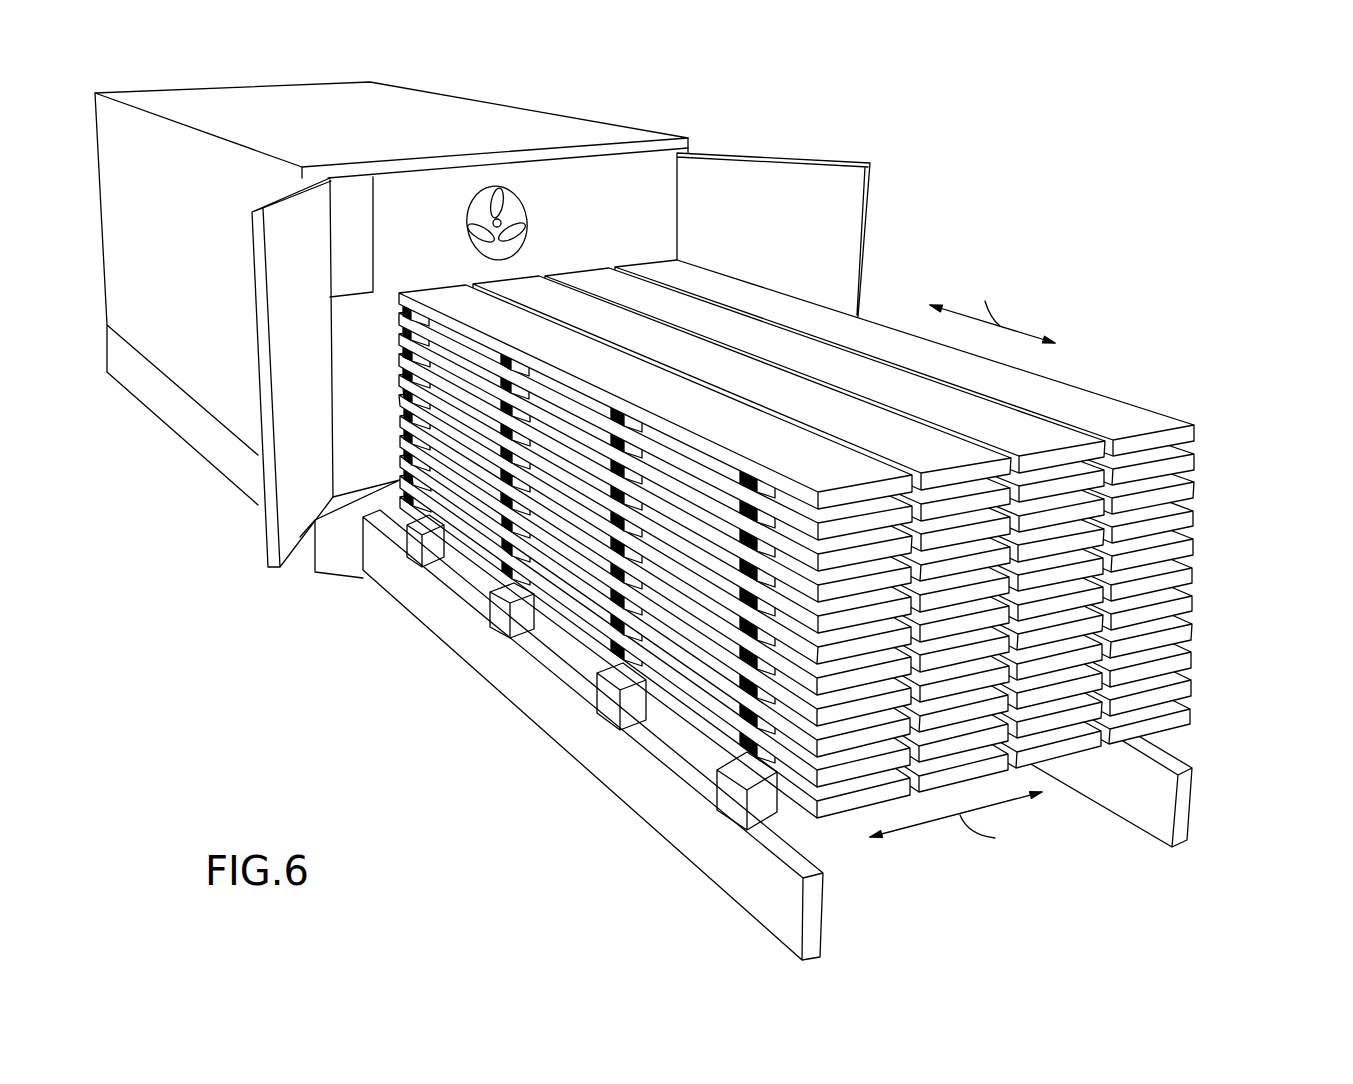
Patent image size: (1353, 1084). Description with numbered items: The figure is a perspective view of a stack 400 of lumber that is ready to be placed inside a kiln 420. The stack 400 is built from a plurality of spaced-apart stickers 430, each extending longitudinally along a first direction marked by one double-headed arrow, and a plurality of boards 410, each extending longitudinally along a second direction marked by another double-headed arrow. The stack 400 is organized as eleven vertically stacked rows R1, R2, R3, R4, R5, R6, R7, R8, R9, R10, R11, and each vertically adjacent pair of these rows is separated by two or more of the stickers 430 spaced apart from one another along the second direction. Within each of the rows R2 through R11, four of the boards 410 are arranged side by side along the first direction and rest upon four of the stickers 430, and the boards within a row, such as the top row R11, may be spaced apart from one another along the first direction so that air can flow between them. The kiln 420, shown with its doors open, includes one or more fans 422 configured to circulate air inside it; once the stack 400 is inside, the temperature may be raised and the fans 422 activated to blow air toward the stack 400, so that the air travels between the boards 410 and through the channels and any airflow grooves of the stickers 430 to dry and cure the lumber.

The stack 400 is at (1165, 232).
The boards 410 is at (838, 838).
The kiln 420 is at (565, 117).
The fans 422 is at (476, 186).
The stickers 430 is at (402, 492).
The row R1 is at (1204, 709).
The row R2 is at (1204, 681).
The row R3 is at (1204, 653).
The row R4 is at (1204, 625).
The row R5 is at (1204, 597).
The row R6 is at (1204, 569).
The row R7 is at (1204, 541).
The row R8 is at (1204, 513).
The row R9 is at (1204, 485).
The row R10 is at (1204, 457).
The row R11 is at (1204, 429).